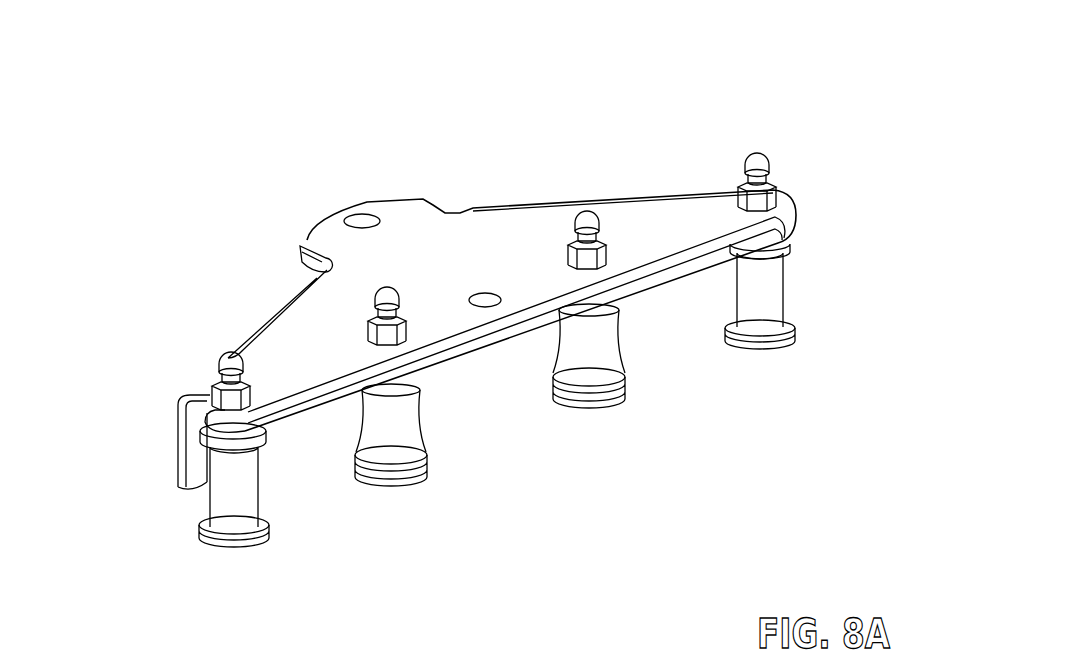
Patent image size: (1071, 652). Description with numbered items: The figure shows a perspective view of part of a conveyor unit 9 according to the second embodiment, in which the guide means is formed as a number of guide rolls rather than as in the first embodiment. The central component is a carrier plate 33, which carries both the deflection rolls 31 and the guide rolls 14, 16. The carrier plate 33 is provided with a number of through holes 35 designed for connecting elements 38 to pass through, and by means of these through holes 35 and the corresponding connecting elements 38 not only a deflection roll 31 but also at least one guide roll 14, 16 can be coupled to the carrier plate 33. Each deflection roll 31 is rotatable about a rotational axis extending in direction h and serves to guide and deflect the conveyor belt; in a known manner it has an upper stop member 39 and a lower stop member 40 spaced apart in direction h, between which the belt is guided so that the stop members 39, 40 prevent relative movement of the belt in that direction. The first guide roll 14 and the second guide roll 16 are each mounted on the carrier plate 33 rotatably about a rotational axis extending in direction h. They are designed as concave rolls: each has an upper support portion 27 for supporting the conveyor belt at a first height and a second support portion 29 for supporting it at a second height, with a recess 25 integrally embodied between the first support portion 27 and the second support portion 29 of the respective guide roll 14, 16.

The conveyor unit 9 is at (342, 68).
The first guide roll 14 is at (413, 408).
The second guide roll 16 is at (650, 347).
The recess 25 is at (413, 418).
The upper support portion 27 is at (420, 417).
The second support portion 29 is at (363, 487).
The deflection roll 31 is at (245, 488).
The carrier plate 33 is at (320, 333).
The through hole 35 is at (370, 213).
The connecting element 38 is at (218, 388).
The upper stop member 39 is at (207, 447).
The lower stop member 40 is at (233, 530).